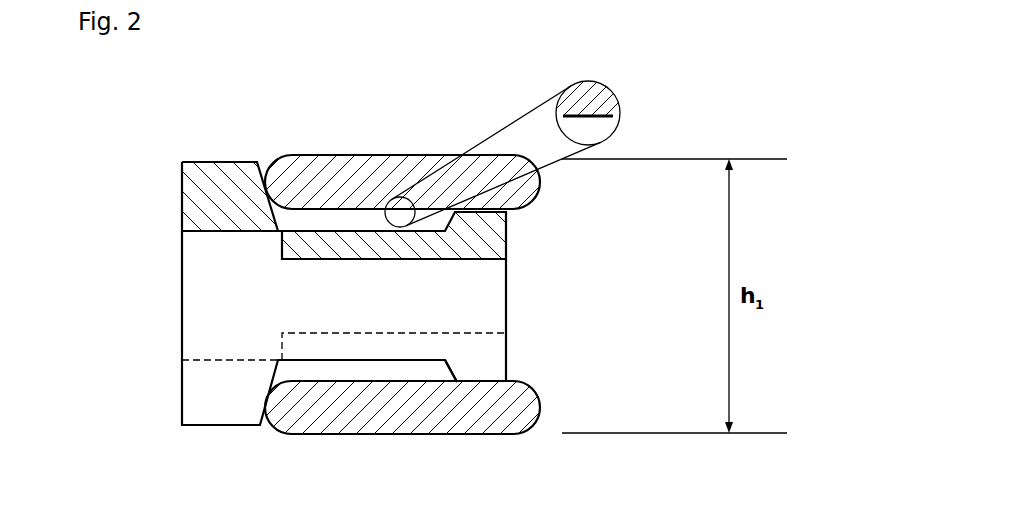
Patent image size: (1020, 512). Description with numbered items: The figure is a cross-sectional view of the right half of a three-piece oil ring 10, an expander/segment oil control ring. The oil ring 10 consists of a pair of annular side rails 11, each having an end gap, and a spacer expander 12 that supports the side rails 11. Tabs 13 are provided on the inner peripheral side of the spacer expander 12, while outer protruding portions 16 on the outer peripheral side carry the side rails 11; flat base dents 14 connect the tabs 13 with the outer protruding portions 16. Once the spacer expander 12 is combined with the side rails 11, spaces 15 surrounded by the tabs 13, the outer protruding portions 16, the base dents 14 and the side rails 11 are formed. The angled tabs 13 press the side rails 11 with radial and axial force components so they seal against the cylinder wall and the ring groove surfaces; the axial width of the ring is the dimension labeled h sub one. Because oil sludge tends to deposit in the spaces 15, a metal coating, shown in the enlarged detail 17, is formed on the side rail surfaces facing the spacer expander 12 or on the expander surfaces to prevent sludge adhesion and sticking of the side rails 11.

The three-piece oil ring 10 is at (490, 278).
The side rails 11 is at (408, 160).
The spacer expander 12 is at (487, 302).
The tabs 13 is at (248, 208).
The base dents 14 is at (327, 357).
The spaces 15 is at (335, 372).
The outer protruding portions 16 is at (482, 222).
The metal coating 17 is at (613, 116).